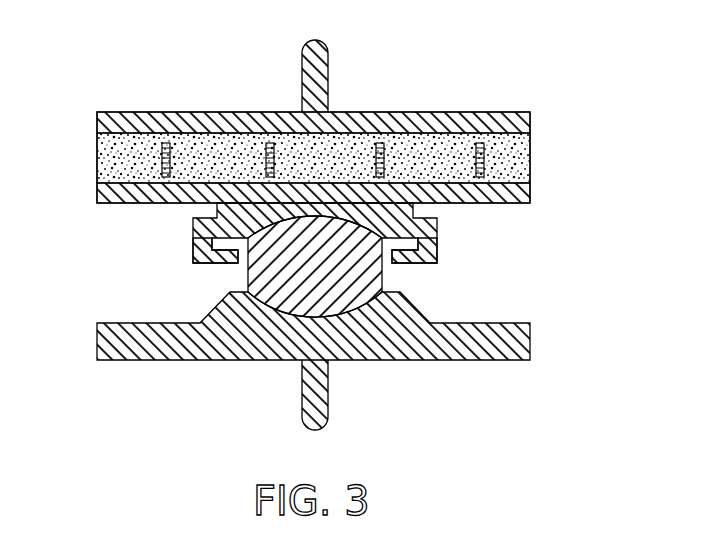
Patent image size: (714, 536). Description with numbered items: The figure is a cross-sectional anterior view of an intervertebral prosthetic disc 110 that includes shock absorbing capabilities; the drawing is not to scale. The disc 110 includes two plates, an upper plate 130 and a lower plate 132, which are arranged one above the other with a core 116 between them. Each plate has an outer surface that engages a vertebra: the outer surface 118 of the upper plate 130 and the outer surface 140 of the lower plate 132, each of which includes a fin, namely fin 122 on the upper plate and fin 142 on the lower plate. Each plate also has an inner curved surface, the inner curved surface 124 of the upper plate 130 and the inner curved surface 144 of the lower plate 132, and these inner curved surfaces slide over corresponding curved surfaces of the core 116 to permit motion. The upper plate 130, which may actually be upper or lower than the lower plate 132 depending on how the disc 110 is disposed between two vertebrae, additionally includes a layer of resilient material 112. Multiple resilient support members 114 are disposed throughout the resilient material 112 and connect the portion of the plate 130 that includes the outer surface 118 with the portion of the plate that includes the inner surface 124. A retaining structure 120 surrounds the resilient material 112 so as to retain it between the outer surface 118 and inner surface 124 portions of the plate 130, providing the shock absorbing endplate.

The intervertebral prosthetic disc 110 is at (316, 233).
The layer of resilient material 112 is at (513, 167).
The resilient support members 114 is at (160, 160).
The core 116 is at (362, 230).
The outer surface 118 is at (479, 105).
The retaining structure 120 is at (538, 147).
The fin 122 is at (336, 72).
The inner curved surface 124 is at (393, 258).
The upper plate 130 is at (316, 160).
The lower plate 132 is at (348, 359).
The outer surface 140 is at (492, 368).
The fin 142 is at (298, 393).
The inner curved surface 144 is at (259, 308).